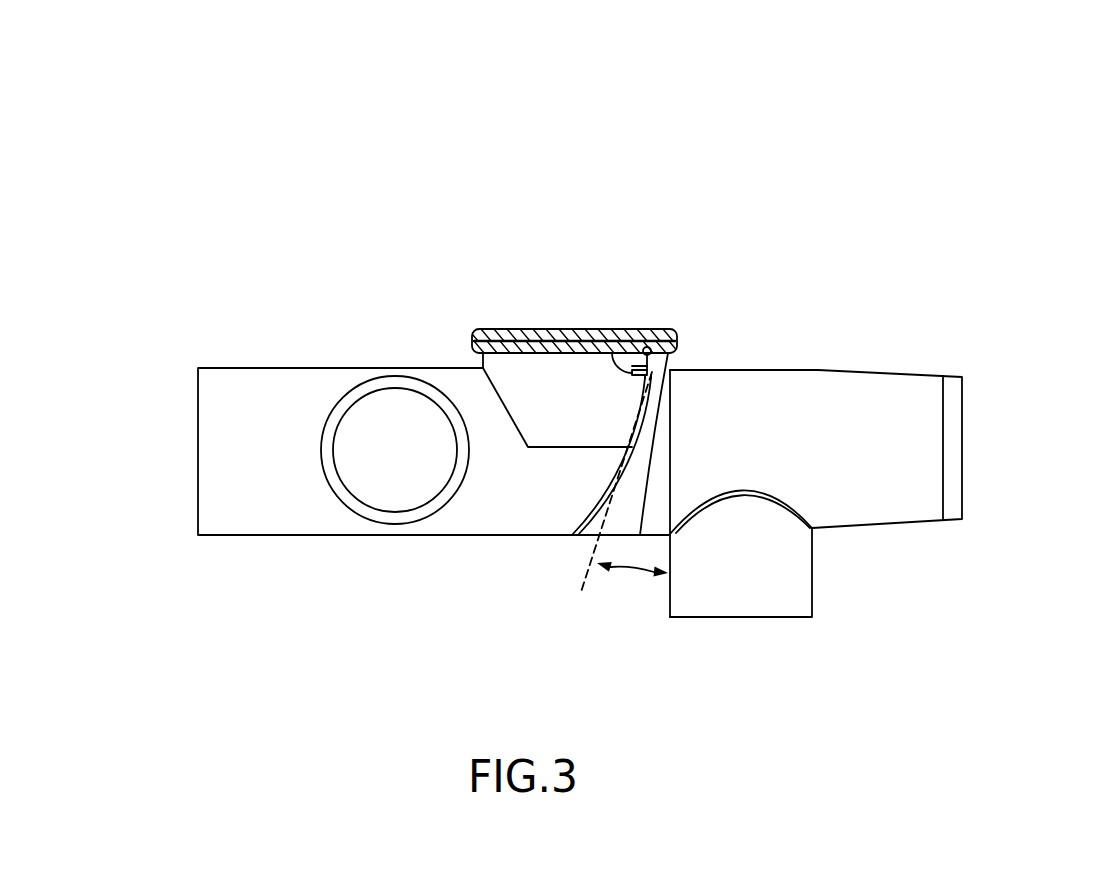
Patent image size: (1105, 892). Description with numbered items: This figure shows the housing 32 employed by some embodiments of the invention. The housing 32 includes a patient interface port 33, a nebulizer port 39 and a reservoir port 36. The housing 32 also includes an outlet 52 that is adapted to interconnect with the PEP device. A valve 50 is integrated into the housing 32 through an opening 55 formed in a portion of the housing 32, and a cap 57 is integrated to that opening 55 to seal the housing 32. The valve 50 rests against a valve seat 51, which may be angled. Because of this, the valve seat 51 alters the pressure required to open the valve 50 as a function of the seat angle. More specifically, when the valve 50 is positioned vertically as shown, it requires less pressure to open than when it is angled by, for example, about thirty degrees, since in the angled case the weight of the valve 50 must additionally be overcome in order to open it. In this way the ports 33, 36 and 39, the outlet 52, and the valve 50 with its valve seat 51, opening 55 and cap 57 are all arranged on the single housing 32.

The housing 32 is at (270, 158).
The patient interface port 33 is at (200, 462).
The reservoir port 36 is at (962, 486).
The nebulizer port 39 is at (787, 618).
The valve 50 is at (576, 486).
The valve seat 51 is at (622, 502).
The outlet 52 is at (382, 472).
The opening 55 is at (640, 373).
The cap 57 is at (536, 337).